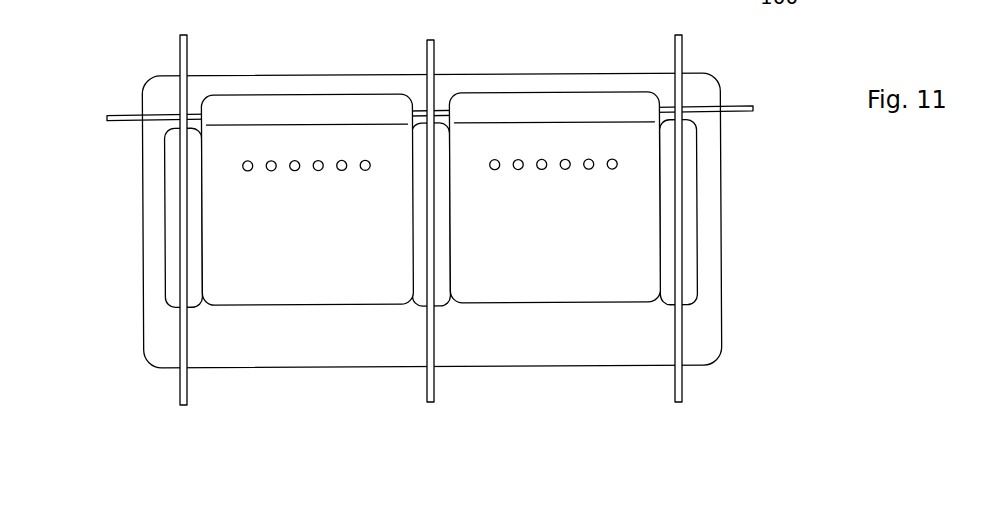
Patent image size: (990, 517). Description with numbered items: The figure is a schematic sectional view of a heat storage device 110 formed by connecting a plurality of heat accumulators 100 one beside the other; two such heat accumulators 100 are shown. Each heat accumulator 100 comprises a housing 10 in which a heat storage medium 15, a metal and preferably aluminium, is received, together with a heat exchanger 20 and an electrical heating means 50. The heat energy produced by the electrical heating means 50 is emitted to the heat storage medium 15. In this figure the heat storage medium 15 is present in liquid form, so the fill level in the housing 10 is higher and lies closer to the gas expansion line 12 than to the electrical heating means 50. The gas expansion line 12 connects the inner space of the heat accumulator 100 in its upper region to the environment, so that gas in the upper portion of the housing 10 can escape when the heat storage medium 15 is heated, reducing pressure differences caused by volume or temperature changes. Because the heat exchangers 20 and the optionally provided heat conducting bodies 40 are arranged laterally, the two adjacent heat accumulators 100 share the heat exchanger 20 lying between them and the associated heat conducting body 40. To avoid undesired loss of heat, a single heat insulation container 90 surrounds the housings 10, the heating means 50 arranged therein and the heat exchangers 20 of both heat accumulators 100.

The housing 10 is at (314, 85).
The gas expansion line 12 is at (112, 116).
The heat storage medium 15 is at (332, 270).
The heat exchanger 20 is at (182, 397).
The heat conducting body 40 is at (440, 133).
The electrical heating means 50 is at (248, 180).
The heat insulation container 90 is at (328, 352).
The heat accumulator 100 is at (299, 388).
The heat storage device 110 is at (466, 441).